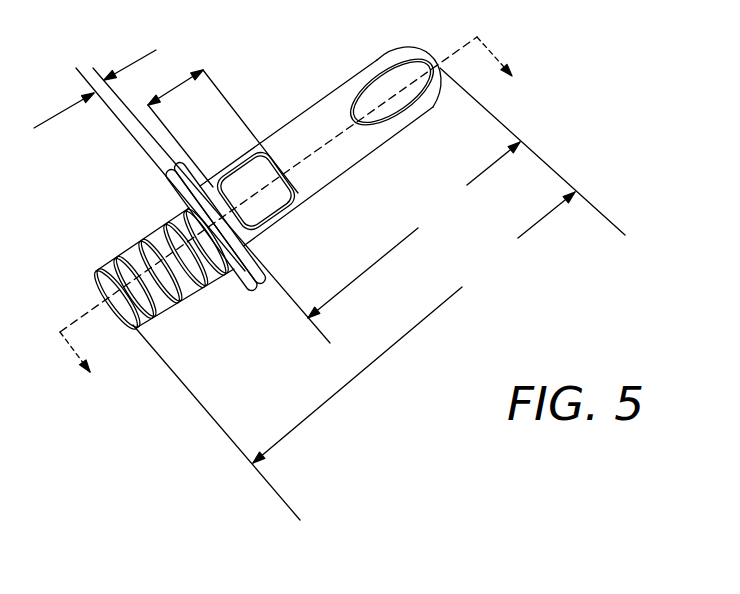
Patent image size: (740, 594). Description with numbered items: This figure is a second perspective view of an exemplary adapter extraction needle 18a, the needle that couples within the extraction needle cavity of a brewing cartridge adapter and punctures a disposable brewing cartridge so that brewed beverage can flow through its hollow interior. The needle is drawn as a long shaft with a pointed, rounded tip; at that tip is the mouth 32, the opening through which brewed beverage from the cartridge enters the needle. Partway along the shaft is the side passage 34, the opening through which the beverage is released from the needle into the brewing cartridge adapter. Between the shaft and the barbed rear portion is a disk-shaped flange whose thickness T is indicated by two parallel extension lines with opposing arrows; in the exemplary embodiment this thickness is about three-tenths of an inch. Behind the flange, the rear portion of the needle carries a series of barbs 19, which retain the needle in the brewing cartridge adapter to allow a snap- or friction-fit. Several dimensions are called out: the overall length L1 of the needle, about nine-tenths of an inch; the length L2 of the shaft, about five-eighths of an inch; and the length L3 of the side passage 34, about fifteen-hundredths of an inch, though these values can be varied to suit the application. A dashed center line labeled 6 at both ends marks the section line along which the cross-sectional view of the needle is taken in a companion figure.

The line 6- 6 is at (295, 225).
The adapter extraction needle 18a is at (168, 195).
The barbs 19 is at (147, 287).
The mouth 32 is at (392, 91).
The side passage 34 is at (256, 191).
The thickness T is at (171, 196).
The overall length L1 is at (354, 356).
The length L2 is at (414, 230).
The length L3 is at (223, 100).